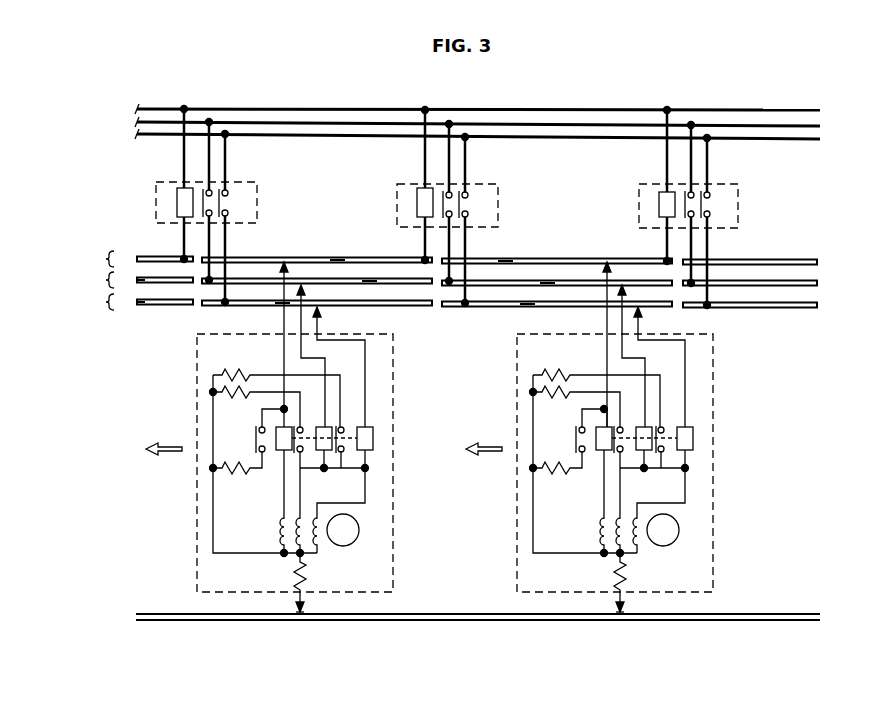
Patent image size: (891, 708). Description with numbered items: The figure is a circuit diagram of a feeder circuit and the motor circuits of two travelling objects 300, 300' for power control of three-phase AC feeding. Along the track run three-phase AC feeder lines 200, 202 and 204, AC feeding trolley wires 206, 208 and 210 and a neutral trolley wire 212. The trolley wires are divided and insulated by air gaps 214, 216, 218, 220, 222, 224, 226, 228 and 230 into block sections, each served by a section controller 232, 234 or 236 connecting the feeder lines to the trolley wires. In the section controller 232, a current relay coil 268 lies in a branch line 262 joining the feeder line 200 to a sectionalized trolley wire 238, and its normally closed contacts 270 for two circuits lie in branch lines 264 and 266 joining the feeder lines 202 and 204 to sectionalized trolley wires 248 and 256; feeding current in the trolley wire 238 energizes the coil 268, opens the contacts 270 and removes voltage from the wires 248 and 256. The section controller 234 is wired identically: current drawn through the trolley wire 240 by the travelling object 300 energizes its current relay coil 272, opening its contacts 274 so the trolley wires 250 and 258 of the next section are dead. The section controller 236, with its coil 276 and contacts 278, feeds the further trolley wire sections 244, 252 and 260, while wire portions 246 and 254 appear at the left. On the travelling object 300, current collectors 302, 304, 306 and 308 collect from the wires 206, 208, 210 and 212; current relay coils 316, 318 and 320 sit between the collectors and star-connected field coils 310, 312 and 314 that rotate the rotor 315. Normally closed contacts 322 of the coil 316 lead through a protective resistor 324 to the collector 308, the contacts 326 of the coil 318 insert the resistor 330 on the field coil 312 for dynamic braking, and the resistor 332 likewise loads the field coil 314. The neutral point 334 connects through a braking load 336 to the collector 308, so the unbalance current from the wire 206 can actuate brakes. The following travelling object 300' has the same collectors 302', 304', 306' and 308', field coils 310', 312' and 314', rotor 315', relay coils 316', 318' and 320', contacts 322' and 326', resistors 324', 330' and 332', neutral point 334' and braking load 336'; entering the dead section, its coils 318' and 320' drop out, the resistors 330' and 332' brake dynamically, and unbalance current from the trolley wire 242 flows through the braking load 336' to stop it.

The three-phase AC feeder line 200 is at (284, 108).
The three-phase AC feeder line 202 is at (338, 121).
The three-phase AC feeder line 204 is at (390, 133).
The AC feeding trolley wire 206 is at (88, 257).
The AC feeding trolley wire 208 is at (88, 279).
The AC feeding trolley wire 210 is at (88, 301).
The neutral trolley wire 212 is at (228, 622).
The air gap 214 is at (194, 262).
The air gap 216 is at (194, 284).
The air gap 218 is at (194, 306).
The air gap 220 is at (437, 263).
The air gap 222 is at (437, 285).
The air gap 224 is at (437, 307).
The air gap 226 is at (679, 263).
The air gap 228 is at (679, 285).
The air gap 230 is at (688, 309).
The section controller 232 is at (158, 182).
The section controller 234 is at (410, 184).
The section controller 236 is at (660, 184).
The sectionalized trolley wire 238 is at (183, 250).
The trolley wire 240 is at (334, 256).
The trolley wire 242 is at (548, 278).
The rail segment 244 is at (768, 257).
The rail segment end 246 is at (139, 285).
The sectionalized trolley wire 248 is at (370, 277).
The trolley wire 250 is at (505, 257).
The rail segment 252 is at (800, 282).
The rail segment end 254 is at (140, 308).
The sectionalized trolley wire 256 is at (282, 306).
The trolley wire 258 is at (527, 308).
The rail segment 260 is at (780, 309).
The branch line 262 is at (182, 166).
The branch line 264 is at (211, 150).
The branch line 266 is at (228, 166).
The current relay coil 268 is at (177, 206).
The normally closed contacts 270 is at (232, 206).
The current relay coil 272 is at (417, 206).
The contacts 274 is at (470, 206).
The relay coil 276 is at (659, 206).
The relay contacts 278 is at (713, 206).
The travelling object 300 is at (322, 463).
The following travelling object 300' is at (643, 463).
The current collector 302 is at (306, 344).
The current collector 302' is at (580, 344).
The current collector 304 is at (315, 355).
The current collector 304' is at (597, 355).
The current collector 306 is at (339, 367).
The current collector 306' is at (619, 367).
The current collector 308 is at (330, 606).
The current collector 308' is at (655, 606).
The field coil 310 is at (255, 503).
The field coil 310' is at (576, 503).
The field coil 312 is at (305, 502).
The field coil 312' is at (618, 502).
The field coil 314 is at (318, 576).
The field coil 314' is at (642, 576).
The rotor 315 is at (354, 544).
The rotor 315' is at (688, 543).
The current relay coil 316 is at (254, 425).
The current relay coil 316' is at (574, 425).
The current relay coil 318 is at (344, 461).
The current relay coil 318' is at (669, 461).
The current relay coil 320 is at (370, 429).
The current relay coil 320' is at (693, 439).
The normally closed contacts 322 is at (241, 439).
The normally closed contacts 322' is at (561, 439).
The resistor 324 is at (243, 478).
The resistor 324' is at (560, 478).
The normally closed contacts 326 is at (341, 411).
The normally closed contacts 326' is at (664, 411).
The resistor 330 is at (255, 386).
The resistor 330' is at (575, 386).
The resistor 332 is at (273, 386).
The resistor 332' is at (592, 386).
The neutral point 334 is at (265, 480).
The neutral point 334' is at (585, 480).
The braking load 336 is at (272, 606).
The braking load 336' is at (574, 592).